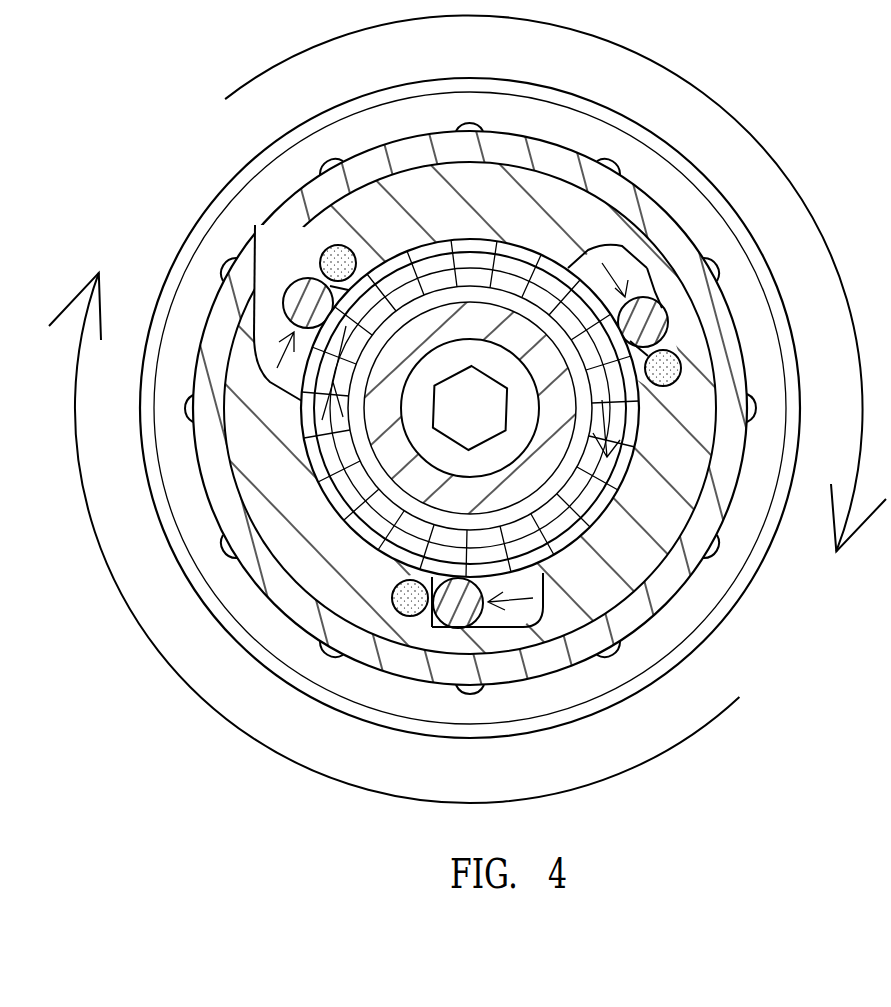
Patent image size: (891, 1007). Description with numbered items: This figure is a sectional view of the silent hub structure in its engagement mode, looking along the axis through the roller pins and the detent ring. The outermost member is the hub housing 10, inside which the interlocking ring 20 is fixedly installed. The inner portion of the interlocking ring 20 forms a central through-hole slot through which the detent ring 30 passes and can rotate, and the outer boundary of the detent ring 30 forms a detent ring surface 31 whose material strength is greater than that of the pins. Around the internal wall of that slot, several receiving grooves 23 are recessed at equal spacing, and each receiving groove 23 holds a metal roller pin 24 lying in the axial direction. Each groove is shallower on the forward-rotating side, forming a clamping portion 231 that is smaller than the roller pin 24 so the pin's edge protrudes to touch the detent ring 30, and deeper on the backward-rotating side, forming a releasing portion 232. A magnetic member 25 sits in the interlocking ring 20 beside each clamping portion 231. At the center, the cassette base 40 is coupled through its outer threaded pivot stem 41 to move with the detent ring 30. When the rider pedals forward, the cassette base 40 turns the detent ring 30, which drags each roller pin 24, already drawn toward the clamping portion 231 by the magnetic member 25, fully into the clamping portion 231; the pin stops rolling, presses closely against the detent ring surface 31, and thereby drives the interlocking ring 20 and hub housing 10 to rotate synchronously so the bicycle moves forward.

The hub housing 10 is at (745, 548).
The interlocking ring 20 is at (221, 449).
The receiving groove 23 is at (252, 328).
The clamping portion 231 is at (320, 281).
The releasing portion 232 is at (260, 364).
The roller pin 24 is at (297, 297).
The magnetic member 25 is at (328, 250).
The detent ring 30 is at (405, 250).
The detent ring surface 31 is at (442, 246).
The cassette base 40 is at (548, 250).
The pivot stem 41 is at (488, 268).